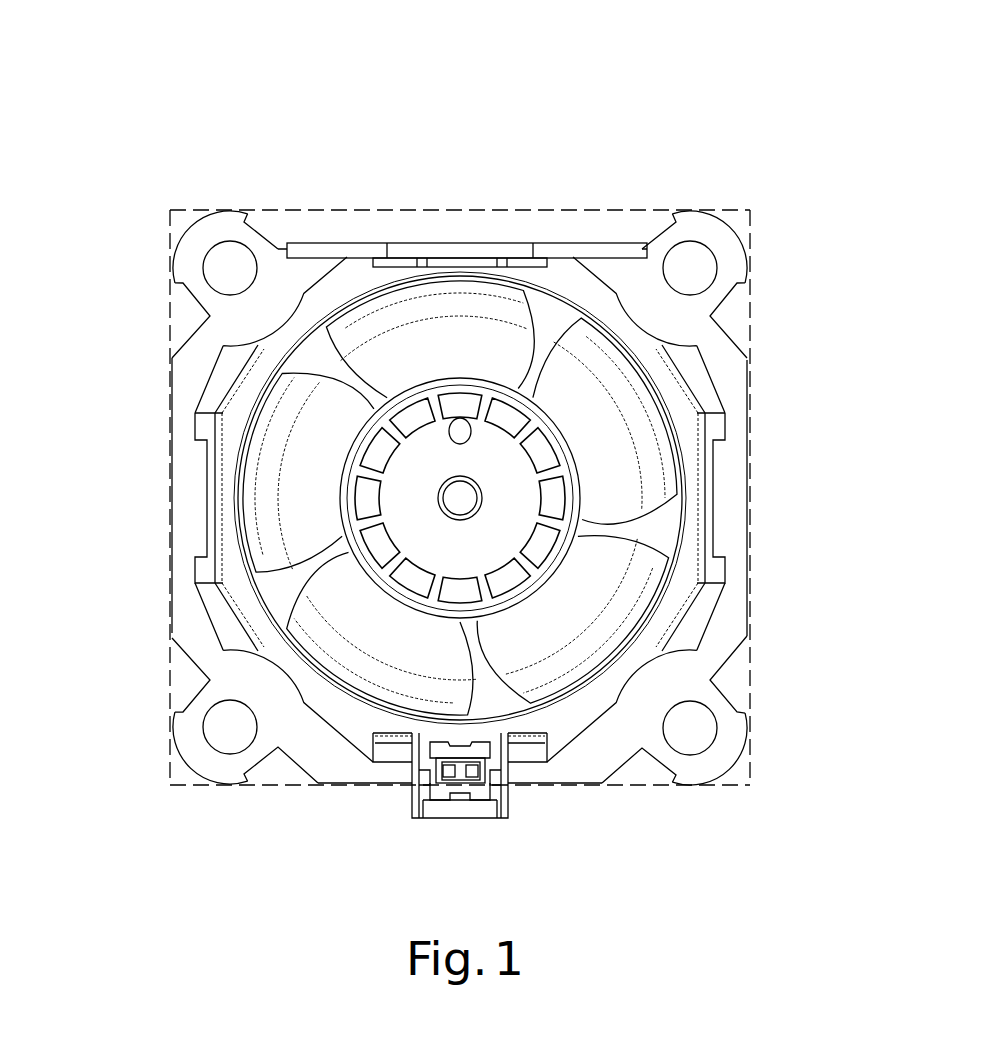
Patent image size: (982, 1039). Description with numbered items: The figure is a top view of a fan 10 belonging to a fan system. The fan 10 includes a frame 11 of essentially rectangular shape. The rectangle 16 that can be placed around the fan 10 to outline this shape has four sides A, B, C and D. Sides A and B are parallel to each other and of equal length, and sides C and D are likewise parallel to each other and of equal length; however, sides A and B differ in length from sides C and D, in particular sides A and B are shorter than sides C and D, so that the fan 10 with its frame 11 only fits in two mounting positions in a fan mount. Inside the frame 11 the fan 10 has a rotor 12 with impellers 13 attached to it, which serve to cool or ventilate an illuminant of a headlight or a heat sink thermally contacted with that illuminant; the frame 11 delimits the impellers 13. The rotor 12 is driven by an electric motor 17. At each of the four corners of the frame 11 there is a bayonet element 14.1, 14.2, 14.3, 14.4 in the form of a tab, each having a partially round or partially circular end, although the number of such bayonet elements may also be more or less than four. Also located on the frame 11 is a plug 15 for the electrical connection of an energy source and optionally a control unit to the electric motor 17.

The fan 10 is at (584, 154).
The frame 11 is at (727, 530).
The rotor 12 is at (466, 497).
The impellers 13 is at (595, 404).
The bayonet element 14.1 is at (225, 212).
The bayonet element 14.2 is at (718, 237).
The bayonet element 14.3 is at (740, 748).
The bayonet element 14.4 is at (225, 770).
The plug 15 is at (460, 808).
The rectangle 16 is at (328, 210).
The electric motor 17 is at (367, 488).
The side A is at (450, 210).
The side B is at (286, 785).
The side C is at (170, 456).
The side D is at (753, 670).